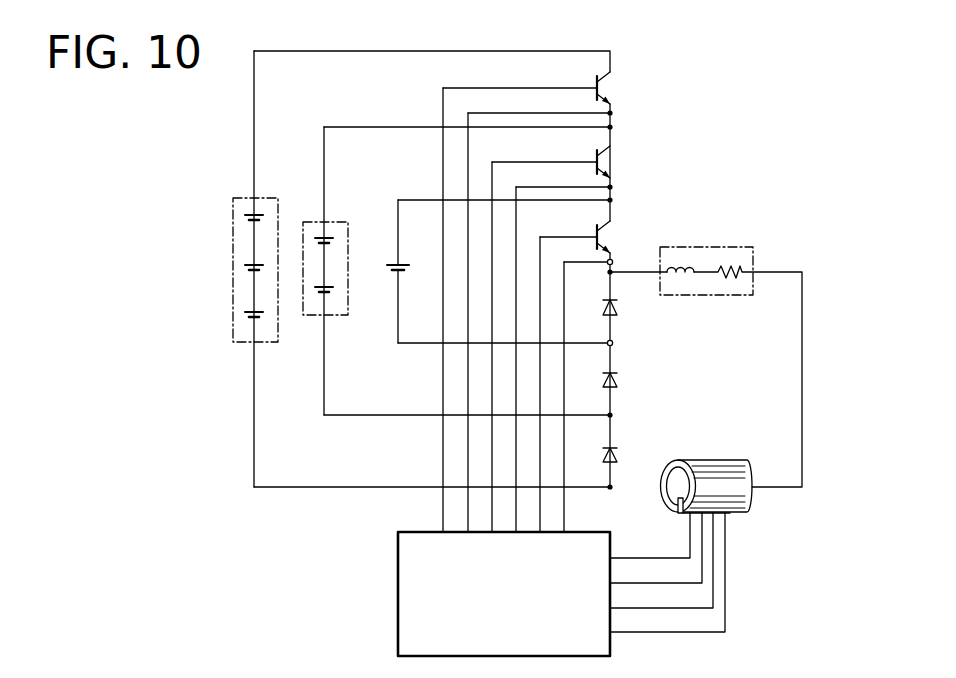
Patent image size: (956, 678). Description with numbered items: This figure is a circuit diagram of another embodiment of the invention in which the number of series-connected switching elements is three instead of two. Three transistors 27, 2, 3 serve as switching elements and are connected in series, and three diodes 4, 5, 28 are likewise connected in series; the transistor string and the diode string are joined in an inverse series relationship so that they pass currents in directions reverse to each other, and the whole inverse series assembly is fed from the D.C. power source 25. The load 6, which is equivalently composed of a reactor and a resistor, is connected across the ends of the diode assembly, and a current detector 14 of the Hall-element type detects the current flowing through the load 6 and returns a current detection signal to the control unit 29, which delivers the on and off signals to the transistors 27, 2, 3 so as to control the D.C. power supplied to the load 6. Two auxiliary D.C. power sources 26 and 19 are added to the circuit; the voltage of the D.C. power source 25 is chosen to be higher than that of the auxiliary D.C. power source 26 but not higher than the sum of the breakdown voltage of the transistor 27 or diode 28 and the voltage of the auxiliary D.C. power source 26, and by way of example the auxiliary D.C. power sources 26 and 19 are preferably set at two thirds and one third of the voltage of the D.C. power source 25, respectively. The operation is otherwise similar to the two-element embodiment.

The transistor 27 is at (613, 85).
The transistor 2 is at (612, 160).
The transistor 3 is at (613, 234).
The diode 4 is at (619, 305).
The diode 5 is at (619, 378).
The diode 28 is at (622, 452).
The load 6 is at (733, 247).
The current detector 14 is at (734, 460).
The auxiliary D.C. power source 19 is at (403, 266).
The D.C. power source 25 is at (275, 198).
The auxiliary D.C. power source 26 is at (342, 222).
The control unit 29 is at (398, 589).